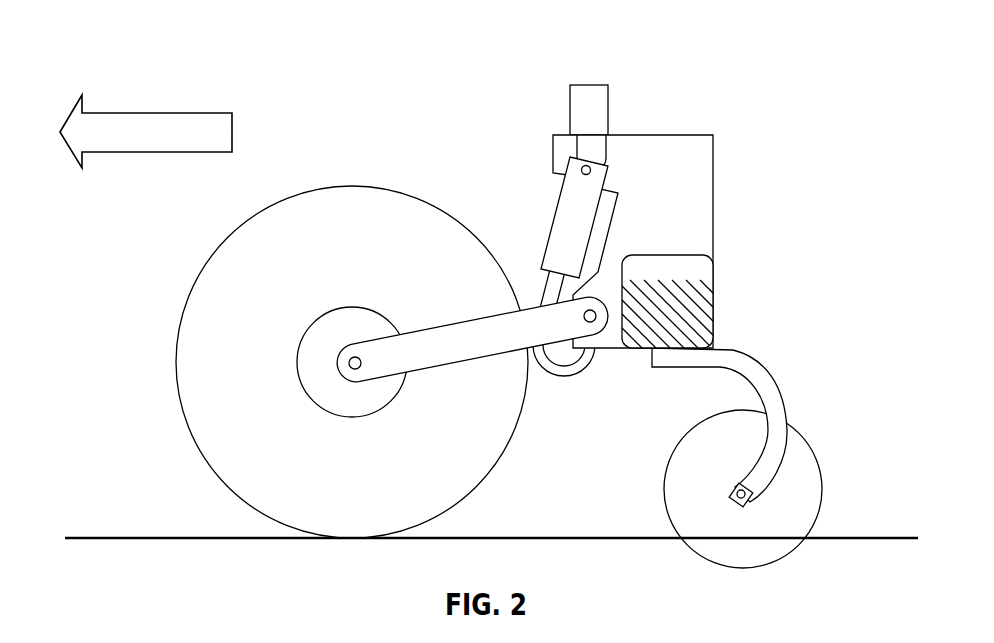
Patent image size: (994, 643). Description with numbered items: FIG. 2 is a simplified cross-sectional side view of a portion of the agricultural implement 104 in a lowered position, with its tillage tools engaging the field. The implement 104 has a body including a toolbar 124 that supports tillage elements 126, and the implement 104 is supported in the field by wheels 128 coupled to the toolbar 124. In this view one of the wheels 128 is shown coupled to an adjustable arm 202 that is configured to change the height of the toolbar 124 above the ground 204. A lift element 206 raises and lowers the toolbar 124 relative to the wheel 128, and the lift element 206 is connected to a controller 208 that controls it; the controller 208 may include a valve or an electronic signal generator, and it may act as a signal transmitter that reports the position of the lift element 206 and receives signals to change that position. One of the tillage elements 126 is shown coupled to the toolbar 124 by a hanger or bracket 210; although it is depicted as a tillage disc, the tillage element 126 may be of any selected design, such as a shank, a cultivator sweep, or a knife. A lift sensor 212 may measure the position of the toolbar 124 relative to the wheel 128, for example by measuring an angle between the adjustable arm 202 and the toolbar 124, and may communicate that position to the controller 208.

The implement 104 is at (258, 62).
The toolbar 124 is at (715, 302).
The tillage element 126 is at (812, 485).
The wheel 128 is at (202, 402).
The adjustable arm 202 is at (393, 350).
The ground 204 is at (140, 538).
The lift element 206 is at (558, 190).
The controller 208 is at (610, 108).
The hanger or bracket 210 is at (772, 378).
The lift sensor 212 is at (567, 377).